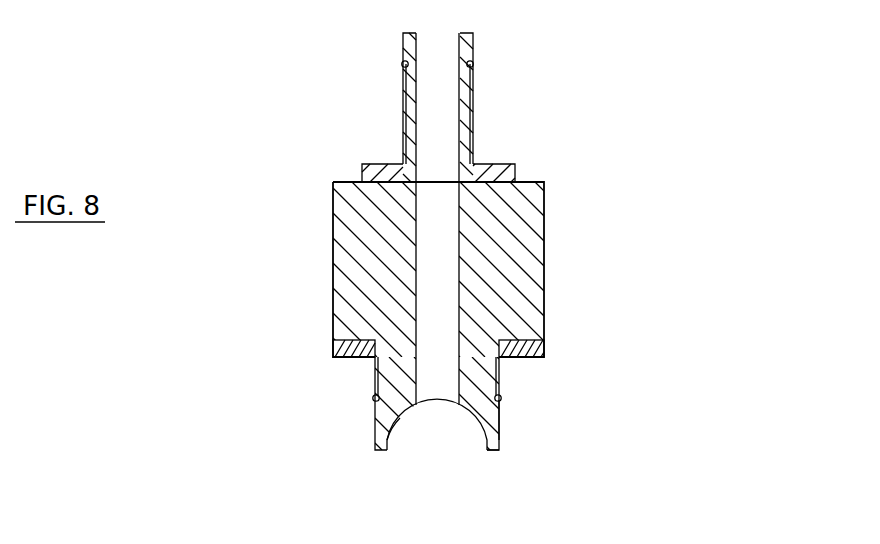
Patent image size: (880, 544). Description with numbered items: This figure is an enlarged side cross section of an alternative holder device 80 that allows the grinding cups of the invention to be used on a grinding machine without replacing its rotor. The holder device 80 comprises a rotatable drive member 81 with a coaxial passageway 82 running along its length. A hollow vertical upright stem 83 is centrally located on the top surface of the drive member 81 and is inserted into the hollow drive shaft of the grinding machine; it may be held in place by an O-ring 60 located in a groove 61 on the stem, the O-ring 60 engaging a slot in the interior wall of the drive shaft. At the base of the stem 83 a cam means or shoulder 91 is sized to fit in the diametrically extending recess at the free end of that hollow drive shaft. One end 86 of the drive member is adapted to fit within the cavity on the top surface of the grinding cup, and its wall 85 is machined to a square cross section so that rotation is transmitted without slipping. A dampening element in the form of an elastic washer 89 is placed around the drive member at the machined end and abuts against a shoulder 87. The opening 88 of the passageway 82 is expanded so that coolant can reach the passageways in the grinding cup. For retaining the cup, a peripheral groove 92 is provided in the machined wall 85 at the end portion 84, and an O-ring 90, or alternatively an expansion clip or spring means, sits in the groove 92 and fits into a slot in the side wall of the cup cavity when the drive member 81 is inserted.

The O-ring 60 is at (402, 63).
The groove 61 is at (467, 62).
The holder device 80 is at (563, 238).
The rotatable drive member 81 is at (545, 280).
The coaxial passageway 82 is at (440, 101).
The hollow vertical upright stem 83 is at (403, 127).
The end portion 84 is at (527, 392).
The wall 85 is at (500, 420).
The end of the drive member 86 is at (495, 452).
The shoulder 87 is at (368, 358).
The opening 88 is at (397, 438).
The elastic washer 89 is at (545, 347).
The O-ring 90 is at (373, 398).
The cam means or shoulder 91 is at (488, 162).
The peripheral groove 92 is at (406, 412).